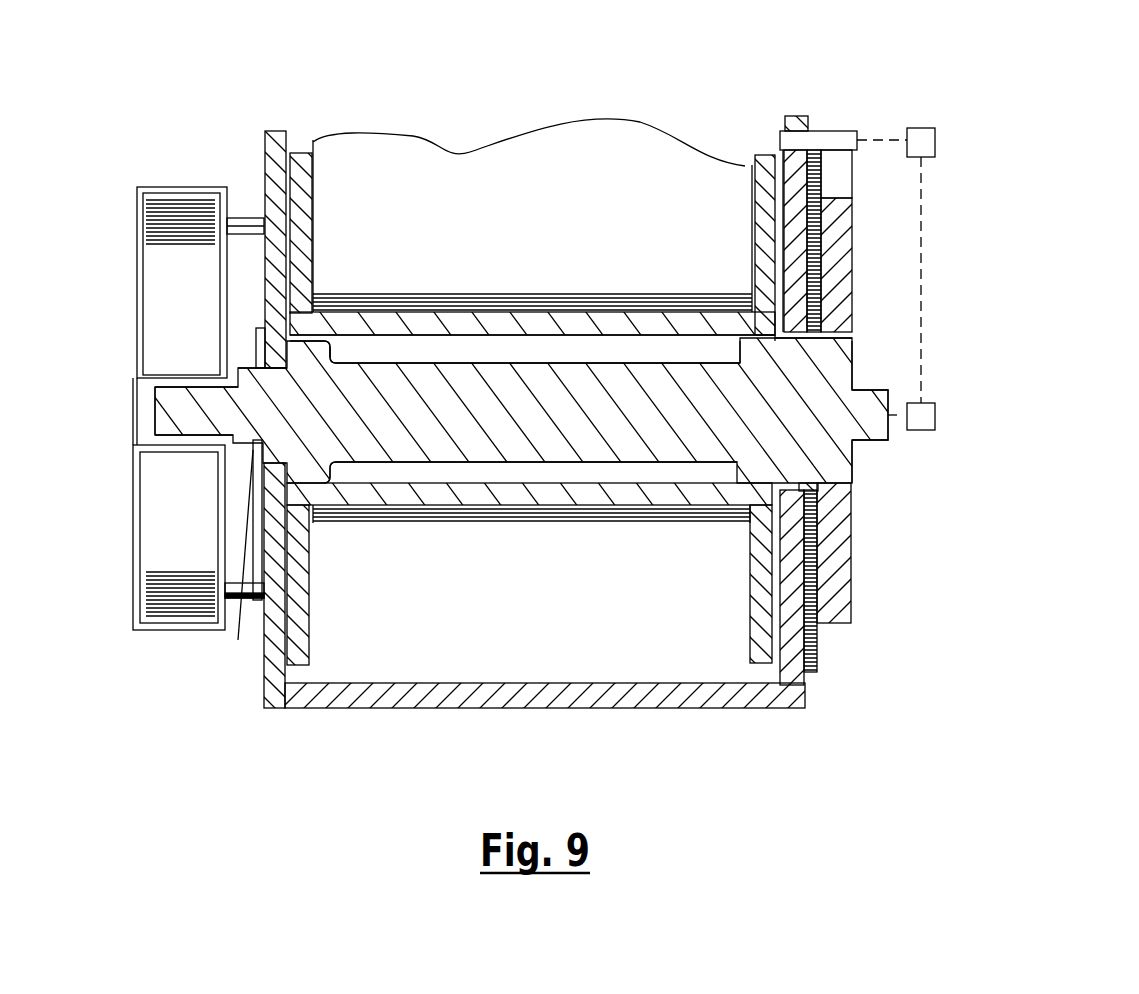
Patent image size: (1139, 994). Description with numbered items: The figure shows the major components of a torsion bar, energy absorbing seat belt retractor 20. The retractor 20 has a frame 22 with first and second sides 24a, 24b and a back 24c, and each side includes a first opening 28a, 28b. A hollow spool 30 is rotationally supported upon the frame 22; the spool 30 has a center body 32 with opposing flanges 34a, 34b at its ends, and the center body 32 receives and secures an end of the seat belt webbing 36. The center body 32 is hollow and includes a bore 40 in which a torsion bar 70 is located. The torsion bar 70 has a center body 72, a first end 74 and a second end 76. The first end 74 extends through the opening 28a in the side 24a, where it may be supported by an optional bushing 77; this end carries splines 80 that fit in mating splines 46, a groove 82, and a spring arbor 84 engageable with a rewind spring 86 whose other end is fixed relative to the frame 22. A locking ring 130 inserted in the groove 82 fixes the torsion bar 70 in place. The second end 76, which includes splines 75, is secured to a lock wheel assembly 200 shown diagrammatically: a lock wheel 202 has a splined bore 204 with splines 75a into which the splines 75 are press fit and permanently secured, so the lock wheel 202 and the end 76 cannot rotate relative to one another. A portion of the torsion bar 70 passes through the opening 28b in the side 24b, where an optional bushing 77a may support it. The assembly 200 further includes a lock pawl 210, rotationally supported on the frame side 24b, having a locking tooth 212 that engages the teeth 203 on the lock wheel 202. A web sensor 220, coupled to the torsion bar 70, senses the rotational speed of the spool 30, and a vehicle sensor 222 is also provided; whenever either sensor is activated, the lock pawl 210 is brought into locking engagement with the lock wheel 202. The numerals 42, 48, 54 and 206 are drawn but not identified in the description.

The seat belt retractor 20 is at (388, 97).
The frame 22 is at (262, 134).
The first side 24a is at (267, 692).
The second side 24b is at (788, 674).
The back 24c is at (440, 690).
The first opening 28a is at (282, 478).
The first opening 28b is at (796, 304).
The hollow spool 30 is at (341, 326).
The center body 32 is at (441, 322).
The flange 34a is at (305, 200).
The flange 34b is at (758, 192).
The seat belt 36 is at (455, 176).
The bore 40 is at (502, 348).
The seal 42 is at (385, 356).
The splines 46 is at (300, 490).
The upper cavity 48 is at (342, 374).
The hub 54 is at (748, 355).
The torsion bar 70 is at (484, 425).
The center body 72 is at (594, 322).
The first end 74 is at (207, 407).
The splines 75 is at (858, 372).
The splines 75a is at (850, 486).
The second end 76 is at (782, 441).
The bushing 77 is at (269, 394).
The bushing 77a is at (813, 152).
The splines 80 is at (293, 486).
The groove 82 is at (252, 454).
The spring arbor 84 is at (160, 409).
The rewind spring 86 is at (140, 222).
The locking ring 130 is at (232, 562).
The lock wheel assembly 200 is at (569, 497).
The lock wheel 202 is at (836, 309).
The teeth 203 is at (848, 216).
The splined bore 204 is at (832, 341).
The lower clamp block 206 is at (834, 542).
The lock pawl 210 is at (840, 174).
The locking tooth 212 is at (840, 190).
The web sensor 220 is at (924, 432).
The vehicle sensor 222 is at (936, 143).